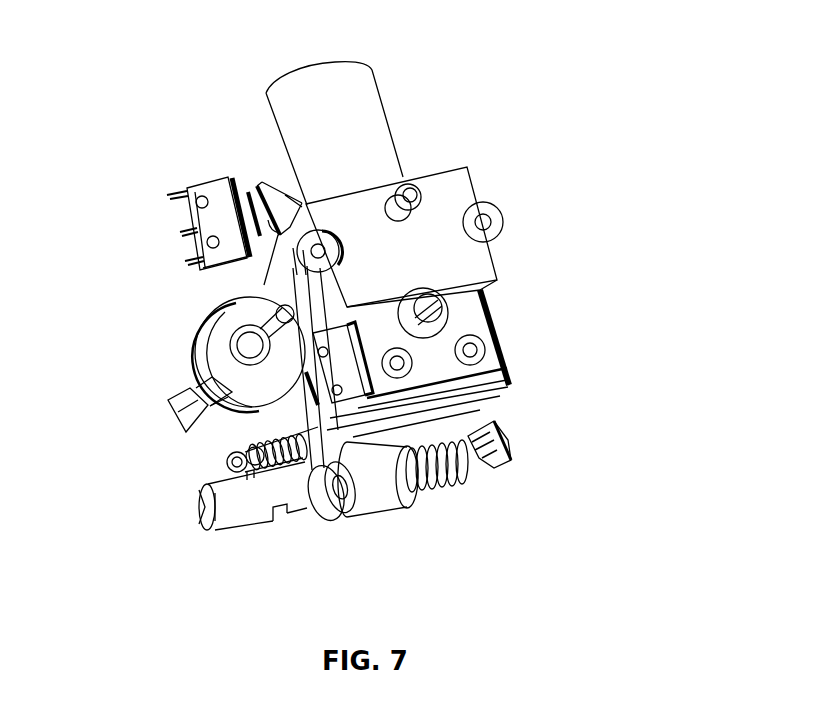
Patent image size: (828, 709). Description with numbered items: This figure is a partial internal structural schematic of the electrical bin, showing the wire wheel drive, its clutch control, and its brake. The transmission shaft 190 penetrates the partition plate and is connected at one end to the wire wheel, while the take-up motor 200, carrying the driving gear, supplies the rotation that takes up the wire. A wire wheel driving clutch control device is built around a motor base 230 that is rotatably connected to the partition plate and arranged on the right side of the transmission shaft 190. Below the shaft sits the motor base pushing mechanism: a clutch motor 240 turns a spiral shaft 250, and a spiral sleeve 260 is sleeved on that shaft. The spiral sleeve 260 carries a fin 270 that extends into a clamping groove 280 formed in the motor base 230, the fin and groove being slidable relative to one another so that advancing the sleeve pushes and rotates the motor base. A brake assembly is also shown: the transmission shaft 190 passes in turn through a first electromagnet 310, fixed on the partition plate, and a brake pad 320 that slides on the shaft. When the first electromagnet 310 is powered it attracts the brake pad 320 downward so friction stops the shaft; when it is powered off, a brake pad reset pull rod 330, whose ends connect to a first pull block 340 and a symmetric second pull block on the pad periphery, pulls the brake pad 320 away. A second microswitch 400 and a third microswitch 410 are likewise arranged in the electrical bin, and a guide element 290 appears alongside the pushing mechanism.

The transmission shaft 190 is at (176, 426).
The take-up motor 200 is at (353, 147).
The motor base 230 is at (500, 387).
The clutch motor 240 is at (250, 498).
The spiral shaft 250 is at (447, 472).
The spiral sleeve 260 is at (375, 485).
The fin 270 is at (337, 443).
The clamping groove 280 is at (318, 425).
The spring 290 is at (268, 458).
The first electromagnet 310 is at (225, 403).
The brake pad 320 is at (275, 212).
The brake pad reset pull rod 330 is at (220, 343).
The first pull block 340 is at (182, 338).
The second microswitch 400 is at (352, 387).
The third microswitch 410 is at (223, 212).